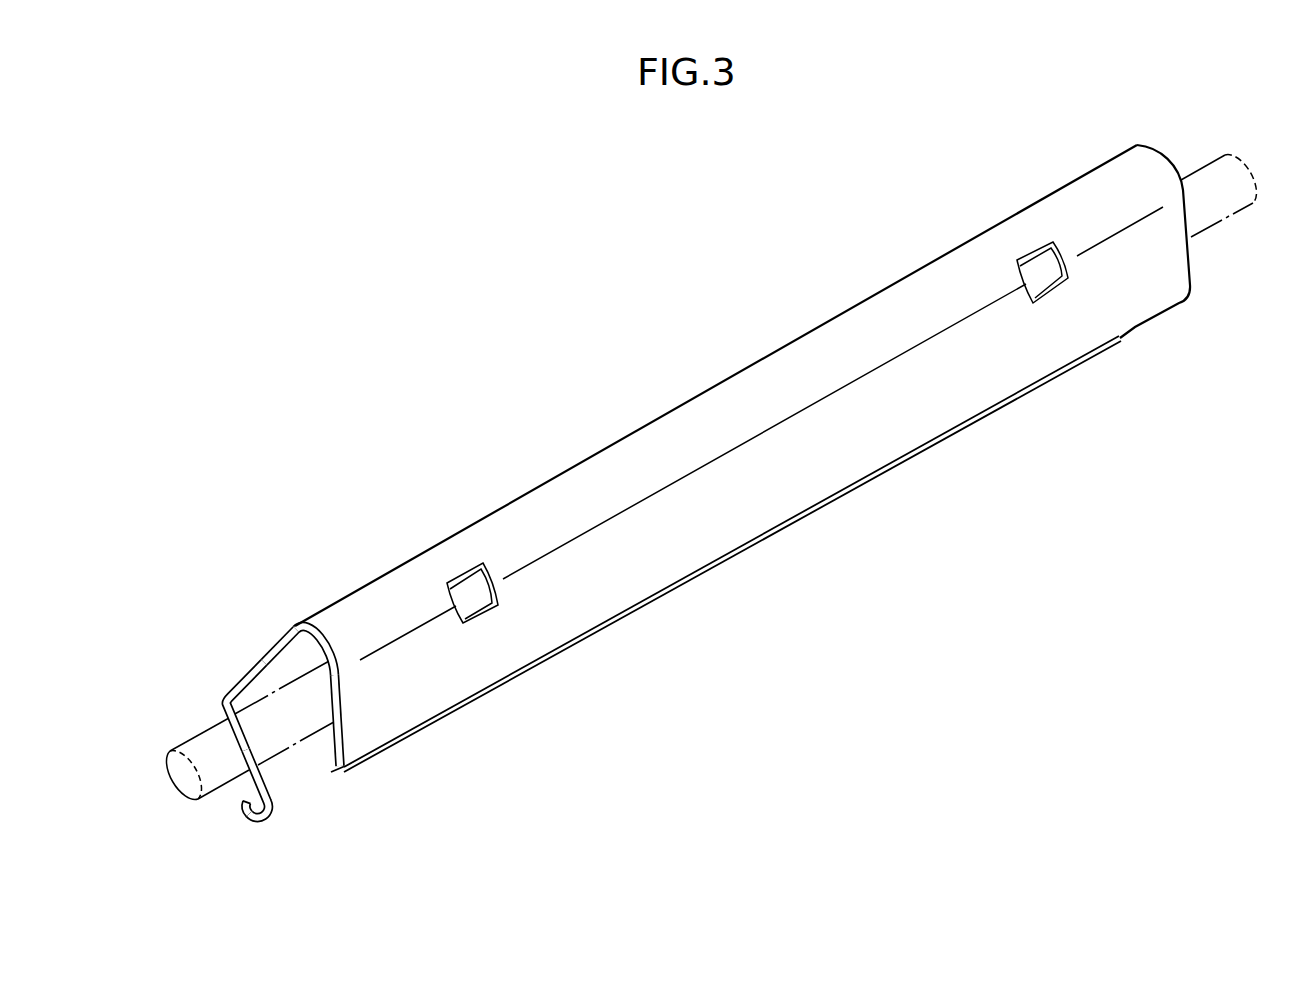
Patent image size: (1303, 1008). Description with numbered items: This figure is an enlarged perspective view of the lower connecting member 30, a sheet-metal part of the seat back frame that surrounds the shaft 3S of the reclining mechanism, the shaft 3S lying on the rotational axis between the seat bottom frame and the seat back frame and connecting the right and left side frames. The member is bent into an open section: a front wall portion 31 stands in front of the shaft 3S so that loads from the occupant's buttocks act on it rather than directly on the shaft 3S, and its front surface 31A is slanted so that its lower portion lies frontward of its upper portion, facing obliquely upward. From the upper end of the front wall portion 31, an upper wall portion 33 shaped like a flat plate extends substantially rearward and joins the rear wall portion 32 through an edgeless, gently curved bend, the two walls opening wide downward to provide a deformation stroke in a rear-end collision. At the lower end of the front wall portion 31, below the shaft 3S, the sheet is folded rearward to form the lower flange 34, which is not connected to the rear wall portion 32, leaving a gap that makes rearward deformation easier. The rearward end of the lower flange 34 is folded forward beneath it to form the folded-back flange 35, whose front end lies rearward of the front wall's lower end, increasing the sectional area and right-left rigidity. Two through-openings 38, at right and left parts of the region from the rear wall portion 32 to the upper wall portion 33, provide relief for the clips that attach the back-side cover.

The lower connecting member 30 is at (740, 370).
The front wall portion 31 is at (250, 675).
The front surface 31A is at (273, 640).
The rear wall portion 32 is at (342, 712).
The upper wall portion 33 is at (325, 647).
The lower flange 34 is at (263, 772).
The folded-back flange 35 is at (242, 807).
The through-opening 38 is at (470, 598).
The shaft 3S is at (193, 737).